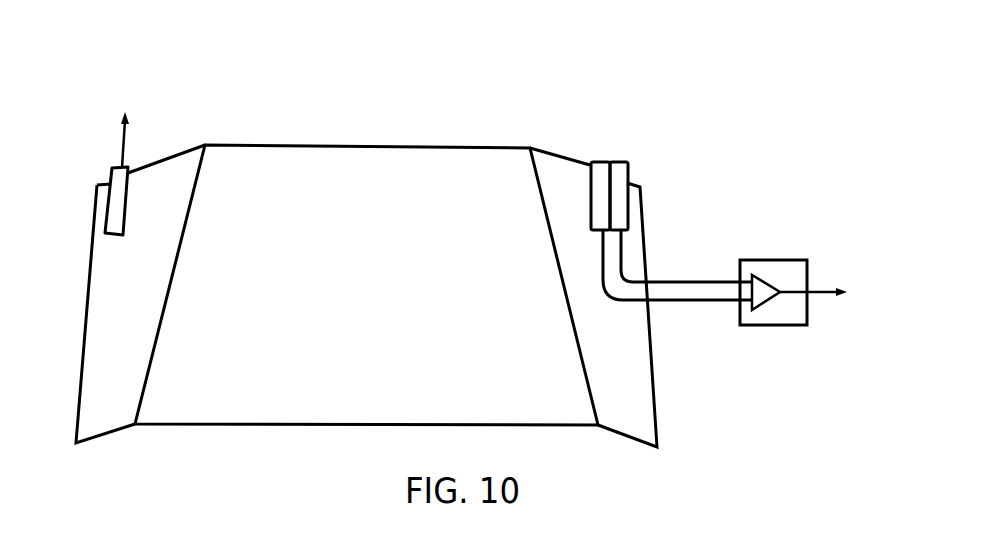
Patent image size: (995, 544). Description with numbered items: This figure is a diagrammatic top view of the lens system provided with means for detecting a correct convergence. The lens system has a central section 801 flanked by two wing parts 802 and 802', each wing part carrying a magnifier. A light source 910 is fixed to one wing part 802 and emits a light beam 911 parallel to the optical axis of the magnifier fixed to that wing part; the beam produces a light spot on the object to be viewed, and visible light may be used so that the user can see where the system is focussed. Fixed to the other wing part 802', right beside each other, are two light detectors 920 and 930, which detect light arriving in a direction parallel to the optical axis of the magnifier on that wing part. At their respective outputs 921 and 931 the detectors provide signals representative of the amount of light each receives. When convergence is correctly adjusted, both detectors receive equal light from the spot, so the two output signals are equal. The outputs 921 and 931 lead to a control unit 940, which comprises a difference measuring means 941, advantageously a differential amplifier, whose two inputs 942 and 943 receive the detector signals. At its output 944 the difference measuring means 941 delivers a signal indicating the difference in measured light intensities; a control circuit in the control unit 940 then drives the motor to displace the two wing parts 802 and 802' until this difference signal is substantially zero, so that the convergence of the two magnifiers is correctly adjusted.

The center window section 801 is at (387, 348).
The wing part 802 is at (140, 294).
The other wing part 802' is at (593, 297).
The light source 910 is at (113, 208).
The light beam 911 is at (125, 145).
The light detector 920 is at (600, 172).
The light detector 930 is at (618, 170).
The output 921 is at (600, 232).
The output 931 is at (620, 231).
The control unit 940 is at (807, 268).
The difference measuring means 941 is at (767, 278).
The input 942 is at (755, 307).
The input 943 is at (753, 277).
The output 944 is at (778, 293).